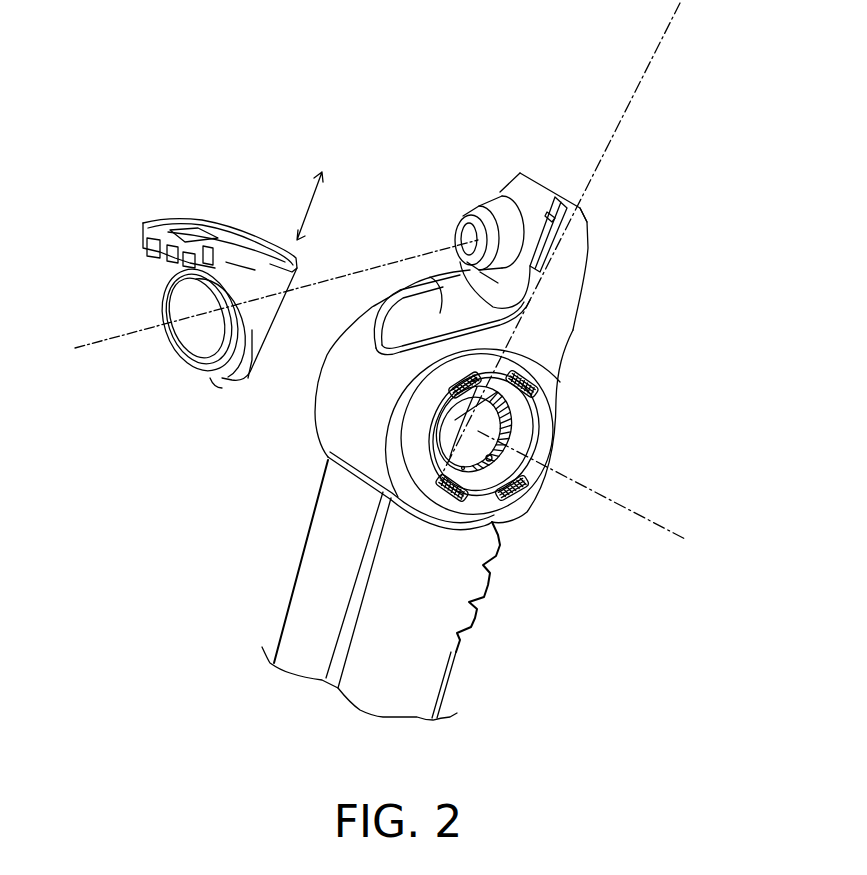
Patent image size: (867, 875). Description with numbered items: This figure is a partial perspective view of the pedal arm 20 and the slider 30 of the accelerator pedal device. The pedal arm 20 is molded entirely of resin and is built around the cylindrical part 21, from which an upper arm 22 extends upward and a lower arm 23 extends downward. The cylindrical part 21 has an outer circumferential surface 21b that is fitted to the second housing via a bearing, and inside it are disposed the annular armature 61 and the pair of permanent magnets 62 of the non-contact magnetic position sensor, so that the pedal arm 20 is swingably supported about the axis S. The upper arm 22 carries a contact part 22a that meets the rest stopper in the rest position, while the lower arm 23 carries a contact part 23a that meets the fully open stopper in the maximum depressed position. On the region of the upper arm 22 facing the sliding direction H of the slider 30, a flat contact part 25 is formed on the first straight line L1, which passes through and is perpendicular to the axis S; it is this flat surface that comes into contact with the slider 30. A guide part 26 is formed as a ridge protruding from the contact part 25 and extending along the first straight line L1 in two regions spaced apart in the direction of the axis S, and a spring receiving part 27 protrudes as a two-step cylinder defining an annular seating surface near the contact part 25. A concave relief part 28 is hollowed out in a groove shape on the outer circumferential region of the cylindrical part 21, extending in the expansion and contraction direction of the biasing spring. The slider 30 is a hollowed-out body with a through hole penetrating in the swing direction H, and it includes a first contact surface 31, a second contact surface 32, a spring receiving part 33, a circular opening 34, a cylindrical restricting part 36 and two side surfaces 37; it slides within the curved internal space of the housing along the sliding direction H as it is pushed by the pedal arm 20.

The pedal arm 20 is at (278, 571).
The cylindrical part 21 is at (337, 422).
The outer circumferential surface 21b is at (407, 438).
The upper arm 22 is at (568, 287).
The contact part 22a is at (587, 250).
The lower arm 23 is at (447, 655).
The contact part 23a is at (490, 590).
The contact part 25 is at (437, 310).
The guide part 26 is at (563, 200).
The spring receiving part 27 is at (490, 200).
The concave relief part 28 is at (395, 290).
The slider 30 is at (212, 201).
The first contact surface 31 is at (252, 332).
The second contact surface 32 is at (178, 222).
The spring receiving part 33 is at (210, 378).
The circular opening 34 is at (203, 333).
The cylindrical restricting part 36 is at (197, 305).
The side surfaces 37 is at (277, 325).
The armature 61 is at (530, 426).
The permanent magnet 62 is at (538, 398).
The sliding direction H is at (520, 43).
The axis S is at (633, 512).
The first straight line L1 is at (633, 103).